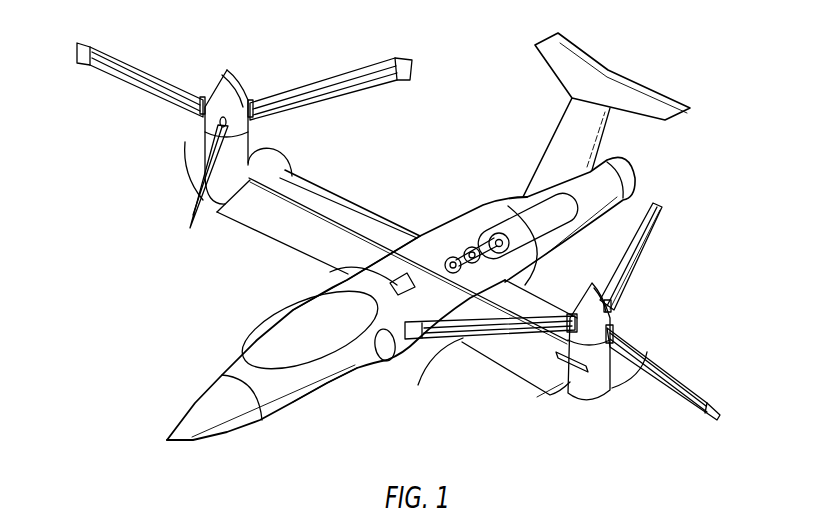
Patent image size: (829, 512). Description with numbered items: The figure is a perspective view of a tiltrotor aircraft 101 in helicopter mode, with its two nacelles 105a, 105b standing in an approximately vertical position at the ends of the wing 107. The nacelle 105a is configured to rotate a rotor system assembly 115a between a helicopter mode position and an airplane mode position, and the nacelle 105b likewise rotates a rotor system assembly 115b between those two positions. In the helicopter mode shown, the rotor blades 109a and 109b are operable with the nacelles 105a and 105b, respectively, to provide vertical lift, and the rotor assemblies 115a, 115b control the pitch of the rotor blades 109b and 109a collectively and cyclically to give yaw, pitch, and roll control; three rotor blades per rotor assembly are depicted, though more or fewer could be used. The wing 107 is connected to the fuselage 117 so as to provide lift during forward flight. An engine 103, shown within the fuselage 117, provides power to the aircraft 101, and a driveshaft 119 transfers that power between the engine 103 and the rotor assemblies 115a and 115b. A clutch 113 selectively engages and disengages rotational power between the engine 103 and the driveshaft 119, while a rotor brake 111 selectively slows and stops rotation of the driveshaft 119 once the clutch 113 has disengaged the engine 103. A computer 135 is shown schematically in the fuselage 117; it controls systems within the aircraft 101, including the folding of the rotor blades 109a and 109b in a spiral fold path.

The tiltrotor aircraft 101 is at (142, 428).
The engine 103 is at (630, 165).
The nacelle 105a is at (598, 406).
The nacelle 105b is at (202, 153).
The wing 107 is at (265, 232).
The rotor blades 109a is at (647, 243).
The rotor blades 109b is at (110, 78).
The rotor brake 111 is at (449, 254).
The clutch 113 is at (481, 247).
The rotor system assembly 115a is at (562, 322).
The rotor system assembly 115b is at (223, 114).
The fuselage 117 is at (328, 383).
The driveshaft 119 is at (290, 197).
The computer 135 is at (343, 273).